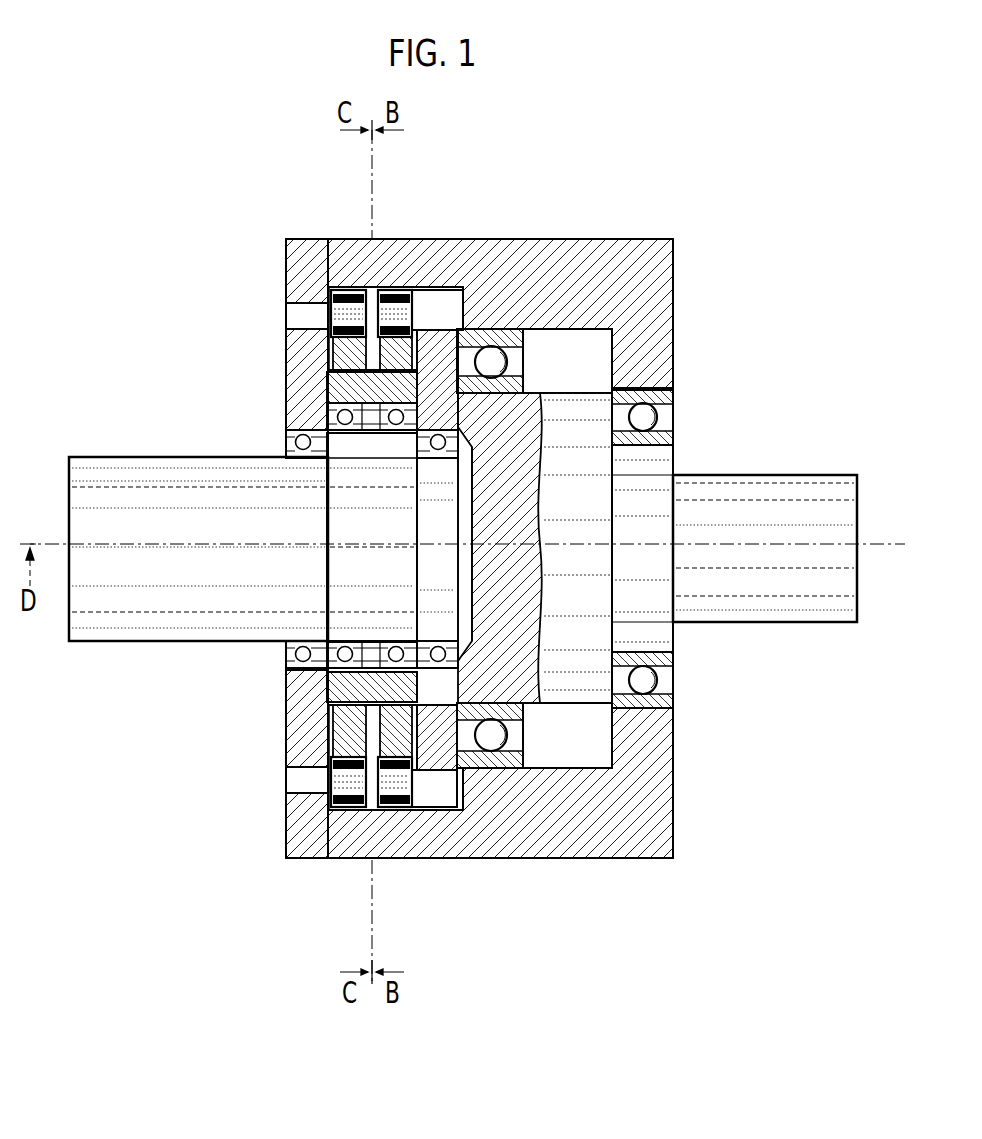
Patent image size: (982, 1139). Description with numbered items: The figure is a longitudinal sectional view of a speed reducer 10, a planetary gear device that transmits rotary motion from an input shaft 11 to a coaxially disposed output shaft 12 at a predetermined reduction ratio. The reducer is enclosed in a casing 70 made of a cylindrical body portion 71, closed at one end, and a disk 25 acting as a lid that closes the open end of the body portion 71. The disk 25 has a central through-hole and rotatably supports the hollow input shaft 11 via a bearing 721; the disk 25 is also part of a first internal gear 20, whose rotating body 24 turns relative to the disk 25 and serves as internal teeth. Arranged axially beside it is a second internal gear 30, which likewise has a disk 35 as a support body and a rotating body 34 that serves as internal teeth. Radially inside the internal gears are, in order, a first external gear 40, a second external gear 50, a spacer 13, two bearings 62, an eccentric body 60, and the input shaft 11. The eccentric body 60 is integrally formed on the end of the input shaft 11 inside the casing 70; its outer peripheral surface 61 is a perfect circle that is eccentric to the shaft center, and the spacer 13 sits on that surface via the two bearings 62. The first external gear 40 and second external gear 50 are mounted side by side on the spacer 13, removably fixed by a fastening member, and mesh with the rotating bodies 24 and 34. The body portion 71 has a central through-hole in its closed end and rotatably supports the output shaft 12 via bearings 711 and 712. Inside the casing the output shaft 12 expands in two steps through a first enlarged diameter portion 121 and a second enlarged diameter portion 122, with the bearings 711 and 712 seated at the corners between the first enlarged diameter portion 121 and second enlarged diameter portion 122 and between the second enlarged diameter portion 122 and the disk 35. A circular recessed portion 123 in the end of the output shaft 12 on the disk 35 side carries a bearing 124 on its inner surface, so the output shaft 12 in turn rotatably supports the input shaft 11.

The speed reducer 10 is at (718, 232).
The input shaft 11 is at (143, 643).
The output shaft 12 is at (820, 492).
The spacer 13 is at (328, 392).
The first internal gear 20 is at (366, 183).
The rotating body 24 is at (352, 287).
The disk 25 is at (310, 238).
The second internal gear 30 is at (467, 183).
The rotating body 34 is at (393, 290).
The disk 35 is at (437, 290).
The first external gear 40 is at (355, 731).
The second external gear 50 is at (450, 672).
The eccentric body 60 is at (332, 548).
The outer peripheral surface 61 is at (352, 596).
The bearings 62 is at (390, 665).
The casing 70 is at (348, 918).
The body portion 71 is at (347, 860).
The first enlarged diameter portion 121 is at (662, 636).
The second enlarged diameter portion 122 is at (582, 693).
The recessed portion 123 is at (535, 592).
The bearing 124 is at (466, 603).
The bearing 711 is at (668, 400).
The bearing 712 is at (507, 337).
The bearing 721 is at (287, 434).